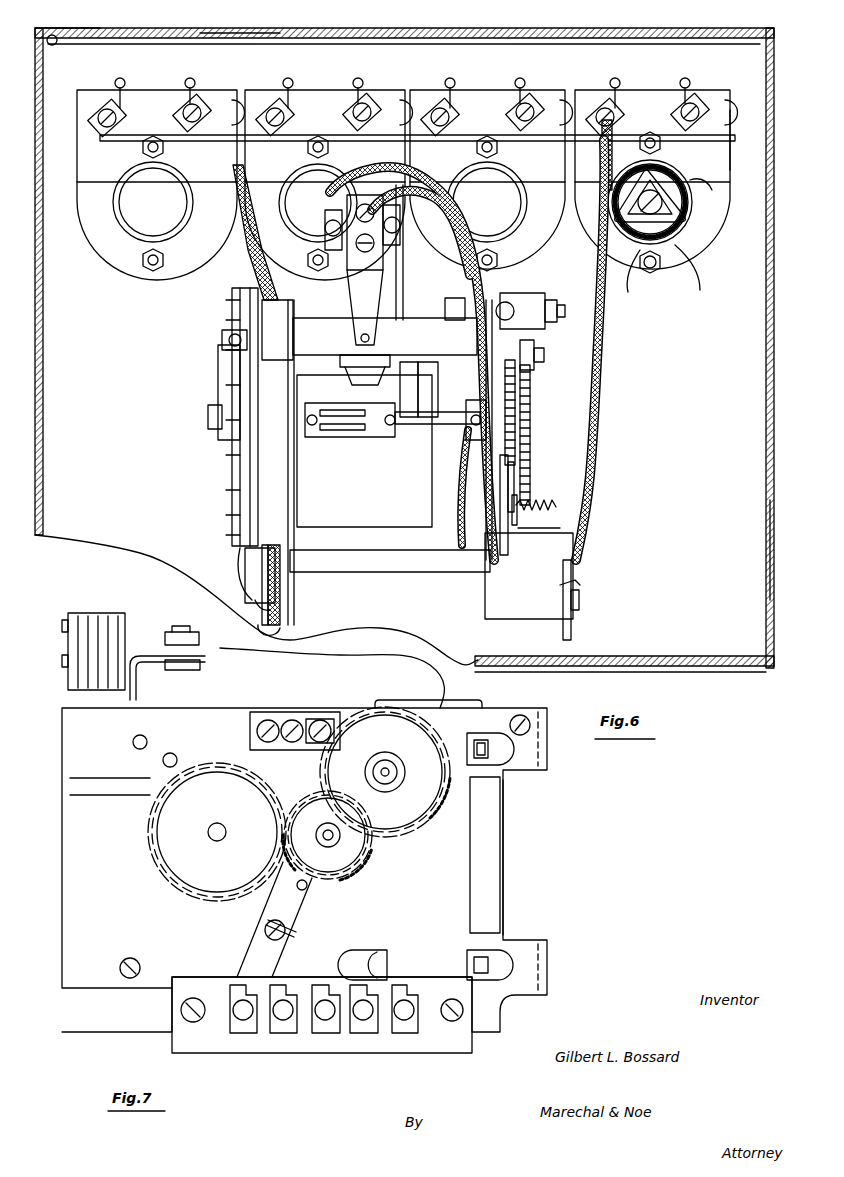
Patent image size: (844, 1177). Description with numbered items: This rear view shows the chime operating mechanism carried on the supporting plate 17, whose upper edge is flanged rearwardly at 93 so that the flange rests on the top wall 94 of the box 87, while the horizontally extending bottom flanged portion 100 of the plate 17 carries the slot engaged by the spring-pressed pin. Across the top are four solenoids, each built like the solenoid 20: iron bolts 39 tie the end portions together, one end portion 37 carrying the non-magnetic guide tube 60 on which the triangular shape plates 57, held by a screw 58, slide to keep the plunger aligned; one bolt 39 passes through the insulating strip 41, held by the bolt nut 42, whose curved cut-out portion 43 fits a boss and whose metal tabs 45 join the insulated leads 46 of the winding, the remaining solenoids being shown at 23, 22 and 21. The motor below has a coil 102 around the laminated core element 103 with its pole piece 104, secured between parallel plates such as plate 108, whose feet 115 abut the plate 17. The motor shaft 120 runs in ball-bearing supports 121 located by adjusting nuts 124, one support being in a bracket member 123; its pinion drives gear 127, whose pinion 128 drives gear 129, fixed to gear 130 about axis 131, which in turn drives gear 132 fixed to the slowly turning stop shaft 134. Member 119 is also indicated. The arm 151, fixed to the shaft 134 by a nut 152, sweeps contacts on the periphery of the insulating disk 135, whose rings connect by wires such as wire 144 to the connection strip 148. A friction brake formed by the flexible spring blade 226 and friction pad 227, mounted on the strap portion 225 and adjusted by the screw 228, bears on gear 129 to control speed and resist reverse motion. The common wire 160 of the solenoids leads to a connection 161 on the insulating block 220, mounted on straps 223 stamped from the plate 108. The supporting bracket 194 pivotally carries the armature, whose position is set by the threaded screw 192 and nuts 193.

In FIG. 6, the supporting plate 17 is at (100, 28).
In FIG. 6, the rearward flange 93 is at (236, 28).
In FIG. 6, the top wall 94 is at (206, 36).
In FIG. 6, the box 87 is at (770, 540).
In FIG. 6, the bottom flanged portion 100 is at (592, 672).
In FIG. 6, the metal tabs 45 is at (183, 102).
In FIG. 6, the insulated leads 46 is at (620, 80).
In FIG. 6, the bolt nut 42 is at (655, 135).
In FIG. 6, the insulating strip 41 is at (722, 143).
In FIG. 6, the bolts 39 is at (662, 143).
In FIG. 6, the common wire 160 is at (612, 150).
In FIG. 6, the curved cut-out portion 43 is at (700, 205).
In FIG. 6, the guide tube 60 is at (695, 210).
In FIG. 6, the solenoid 20 is at (666, 184).
In FIG. 6, the screw 58 is at (692, 262).
In FIG. 6, the end portion 37 is at (623, 268).
In FIG. 6, the triangular shape plates 57 is at (655, 278).
In FIG. 6, the relay unit 23 is at (110, 245).
In FIG. 6, the relay unit 22 is at (298, 258).
In FIG. 6, the relay unit 21 is at (526, 250).
In FIG. 6, the shaft 120 is at (462, 310).
In FIG. 6, the bracket member 123 is at (540, 300).
In FIG. 6, the ball-bearing supports 121 is at (560, 304).
In FIG. 6, the pinion 128 is at (490, 338).
In FIG. 6, the adjusting nut 124 is at (536, 345).
In FIG. 6, the gear 127 is at (545, 355).
In FIG. 7, the gear 127 is at (420, 815).
In FIG. 6, the support 119 is at (420, 388).
In FIG. 6, the gear 129 is at (532, 420).
In FIG. 7, the gear 129 is at (375, 882).
In FIG. 6, the gear 132 is at (518, 455).
In FIG. 7, the gear 132 is at (205, 900).
In FIG. 6, the friction pad 227 is at (514, 470).
In FIG. 6, the flexible spring blade 226 is at (512, 492).
In FIG. 6, the screw 228 is at (556, 503).
In FIG. 6, the strap portion 225 is at (566, 529).
In FIG. 6, the laminated core element 103 is at (430, 440).
In FIG. 6, the stop shaft 134 is at (445, 432).
In FIG. 7, the stop shaft 134 is at (210, 838).
In FIG. 6, the coil 102 is at (355, 507).
In FIG. 7, the coil 102 is at (490, 868).
In FIG. 6, the arm 151 is at (218, 378).
In FIG. 6, the nut 152 is at (210, 420).
In FIG. 6, the insulating disk 135 is at (236, 478).
In FIG. 6, the wire 144 is at (245, 562).
In FIG. 6, the connection strip 148 is at (256, 608).
In FIG. 6, the pole piece 104 is at (290, 590).
In FIG. 6, the supporting plate 108 is at (470, 560).
In FIG. 7, the supporting plate 108 is at (304, 866).
In FIG. 6, the connection 161 is at (580, 586).
In FIG. 6, the insulating block 220 is at (573, 625).
In FIG. 7, the insulating block 220 is at (438, 1055).
In FIG. 6, the straps 223 is at (524, 608).
In FIG. 6, the supporting bracket 194 is at (145, 650).
In FIG. 6, the threaded screw 192 is at (184, 630).
In FIG. 6, the nuts 193 is at (200, 664).
In FIG. 7, the feet 115 is at (545, 768).
In FIG. 7, the gear 130 is at (347, 866).
In FIG. 7, the axis 131 is at (328, 850).